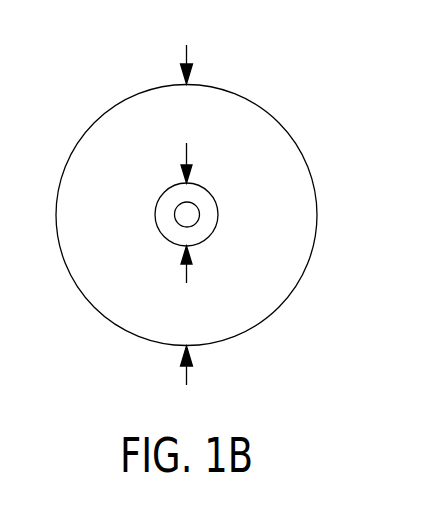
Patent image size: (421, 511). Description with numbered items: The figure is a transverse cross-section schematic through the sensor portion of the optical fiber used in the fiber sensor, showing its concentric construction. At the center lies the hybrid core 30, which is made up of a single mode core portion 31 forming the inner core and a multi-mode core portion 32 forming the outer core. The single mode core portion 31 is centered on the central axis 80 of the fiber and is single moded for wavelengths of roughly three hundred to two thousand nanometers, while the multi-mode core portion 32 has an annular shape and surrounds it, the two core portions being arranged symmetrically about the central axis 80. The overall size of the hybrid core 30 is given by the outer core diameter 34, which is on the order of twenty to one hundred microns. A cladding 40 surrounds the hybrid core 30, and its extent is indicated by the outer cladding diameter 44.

The hybrid core 30 is at (207, 216).
The single mode core portion 31 is at (186, 202).
The multi-mode core portion 32 is at (203, 201).
The outer core diameter 34 is at (188, 281).
The cladding 40 is at (247, 175).
The outer cladding diameter 44 is at (185, 56).
The central axis 80 is at (184, 217).